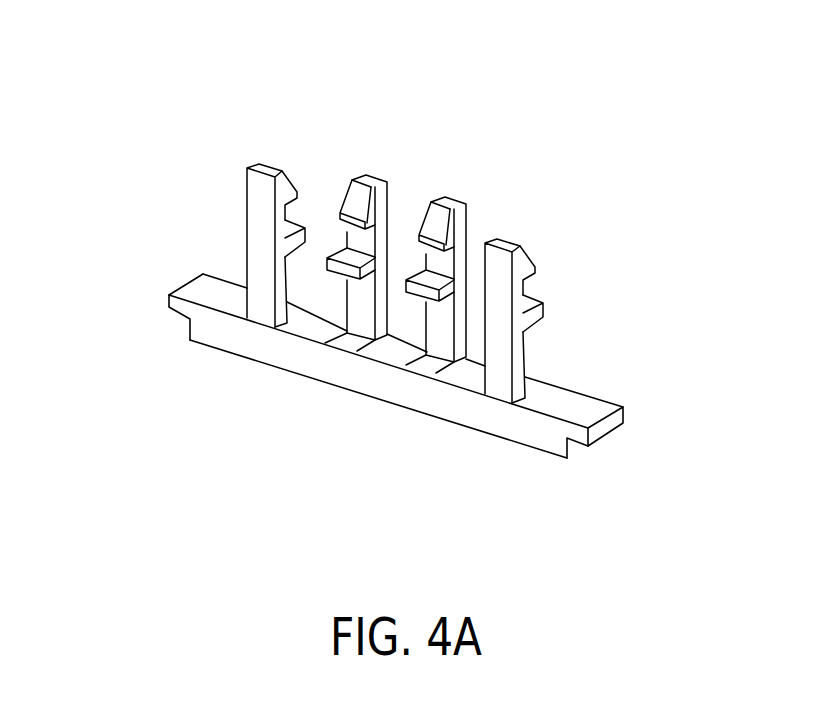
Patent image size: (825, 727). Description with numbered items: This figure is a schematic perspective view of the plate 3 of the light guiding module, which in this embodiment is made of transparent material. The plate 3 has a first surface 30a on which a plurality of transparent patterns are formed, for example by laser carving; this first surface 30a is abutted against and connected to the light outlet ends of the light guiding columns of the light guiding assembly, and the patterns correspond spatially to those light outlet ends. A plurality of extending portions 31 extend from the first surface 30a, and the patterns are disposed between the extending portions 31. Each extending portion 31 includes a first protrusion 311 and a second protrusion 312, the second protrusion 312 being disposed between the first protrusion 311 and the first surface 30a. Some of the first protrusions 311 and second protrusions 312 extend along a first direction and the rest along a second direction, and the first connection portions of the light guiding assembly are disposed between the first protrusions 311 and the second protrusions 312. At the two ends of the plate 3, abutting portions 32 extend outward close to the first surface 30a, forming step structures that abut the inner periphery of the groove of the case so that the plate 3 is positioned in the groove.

The plate 3 is at (793, 73).
The first surface 30a is at (583, 413).
The extending portions 31 is at (503, 390).
The first protrusion 311 is at (283, 189).
The second protrusion 312 is at (345, 260).
The abutting portions 32 is at (178, 308).